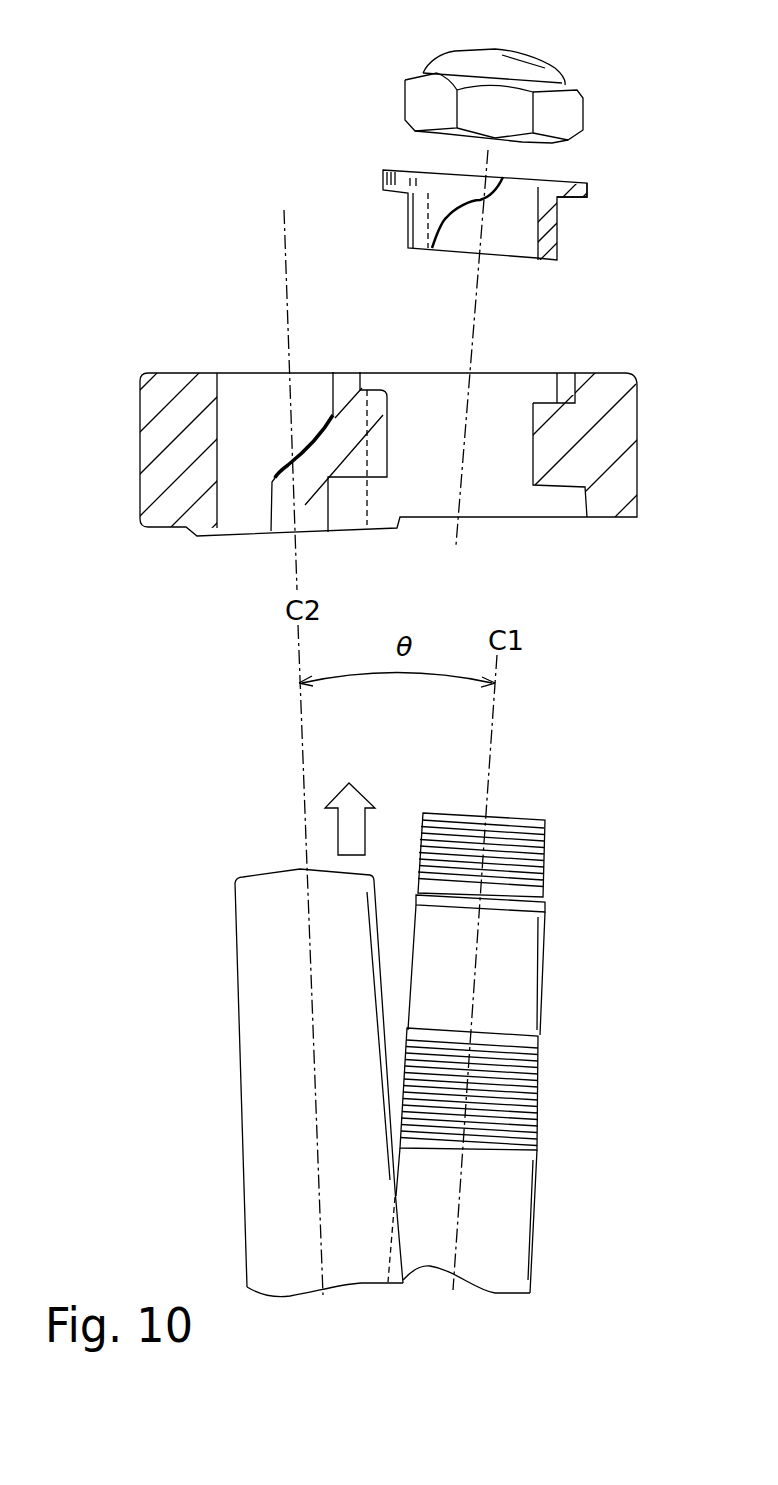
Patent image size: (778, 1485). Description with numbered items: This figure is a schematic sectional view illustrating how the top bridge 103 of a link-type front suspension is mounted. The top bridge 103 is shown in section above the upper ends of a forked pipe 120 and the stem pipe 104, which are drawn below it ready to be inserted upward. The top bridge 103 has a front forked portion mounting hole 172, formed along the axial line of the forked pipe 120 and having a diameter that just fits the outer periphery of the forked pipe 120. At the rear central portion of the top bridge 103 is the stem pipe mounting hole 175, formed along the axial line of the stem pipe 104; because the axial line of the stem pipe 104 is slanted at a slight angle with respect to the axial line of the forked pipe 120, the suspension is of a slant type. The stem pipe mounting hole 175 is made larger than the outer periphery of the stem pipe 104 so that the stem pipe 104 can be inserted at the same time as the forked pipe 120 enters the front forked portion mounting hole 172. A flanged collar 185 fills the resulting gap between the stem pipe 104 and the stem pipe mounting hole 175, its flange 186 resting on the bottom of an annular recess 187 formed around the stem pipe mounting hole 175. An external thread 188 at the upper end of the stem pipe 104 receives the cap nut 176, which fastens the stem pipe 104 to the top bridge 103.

The top bridge 103 is at (148, 442).
The stem pipe 104 is at (577, 1200).
The forked pipe 120 is at (258, 1079).
The front forked portion mounting hole 172 is at (238, 390).
The stem pipe mounting hole 175 is at (437, 393).
The cap nut 176 is at (525, 57).
The flanged collar 185 is at (562, 232).
The flange 186 is at (587, 193).
The annular recess 187 is at (557, 397).
The external thread 188 is at (505, 828).